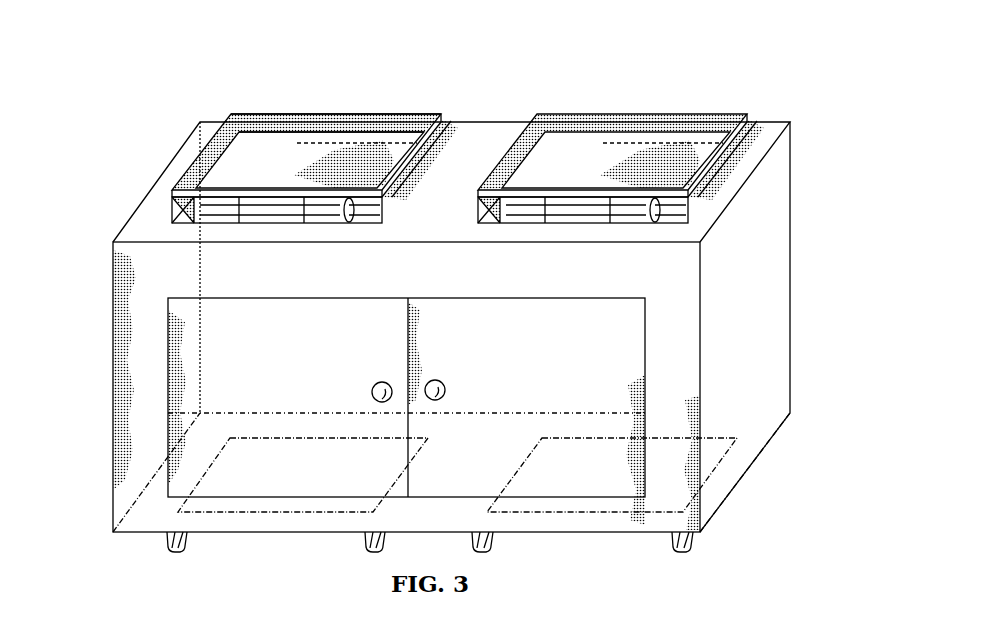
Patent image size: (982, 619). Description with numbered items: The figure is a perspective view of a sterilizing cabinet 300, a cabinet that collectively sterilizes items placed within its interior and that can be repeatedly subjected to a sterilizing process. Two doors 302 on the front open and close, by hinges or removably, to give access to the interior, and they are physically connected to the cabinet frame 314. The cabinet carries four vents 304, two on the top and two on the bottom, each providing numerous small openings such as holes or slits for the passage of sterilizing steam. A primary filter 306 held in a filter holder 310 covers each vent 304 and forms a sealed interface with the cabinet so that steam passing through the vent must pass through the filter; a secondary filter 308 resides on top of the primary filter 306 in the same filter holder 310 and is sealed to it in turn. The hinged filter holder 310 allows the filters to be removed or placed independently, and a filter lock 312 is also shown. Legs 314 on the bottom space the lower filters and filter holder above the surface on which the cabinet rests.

The sterilizing cabinet 300 is at (832, 232).
The doors 302 is at (477, 424).
The vents 304 is at (200, 167).
The primary filter 306 is at (167, 218).
The secondary filter 308 is at (275, 113).
The filter holder 310 is at (347, 113).
The filter lock 312 is at (505, 208).
The legs 314 is at (113, 322).